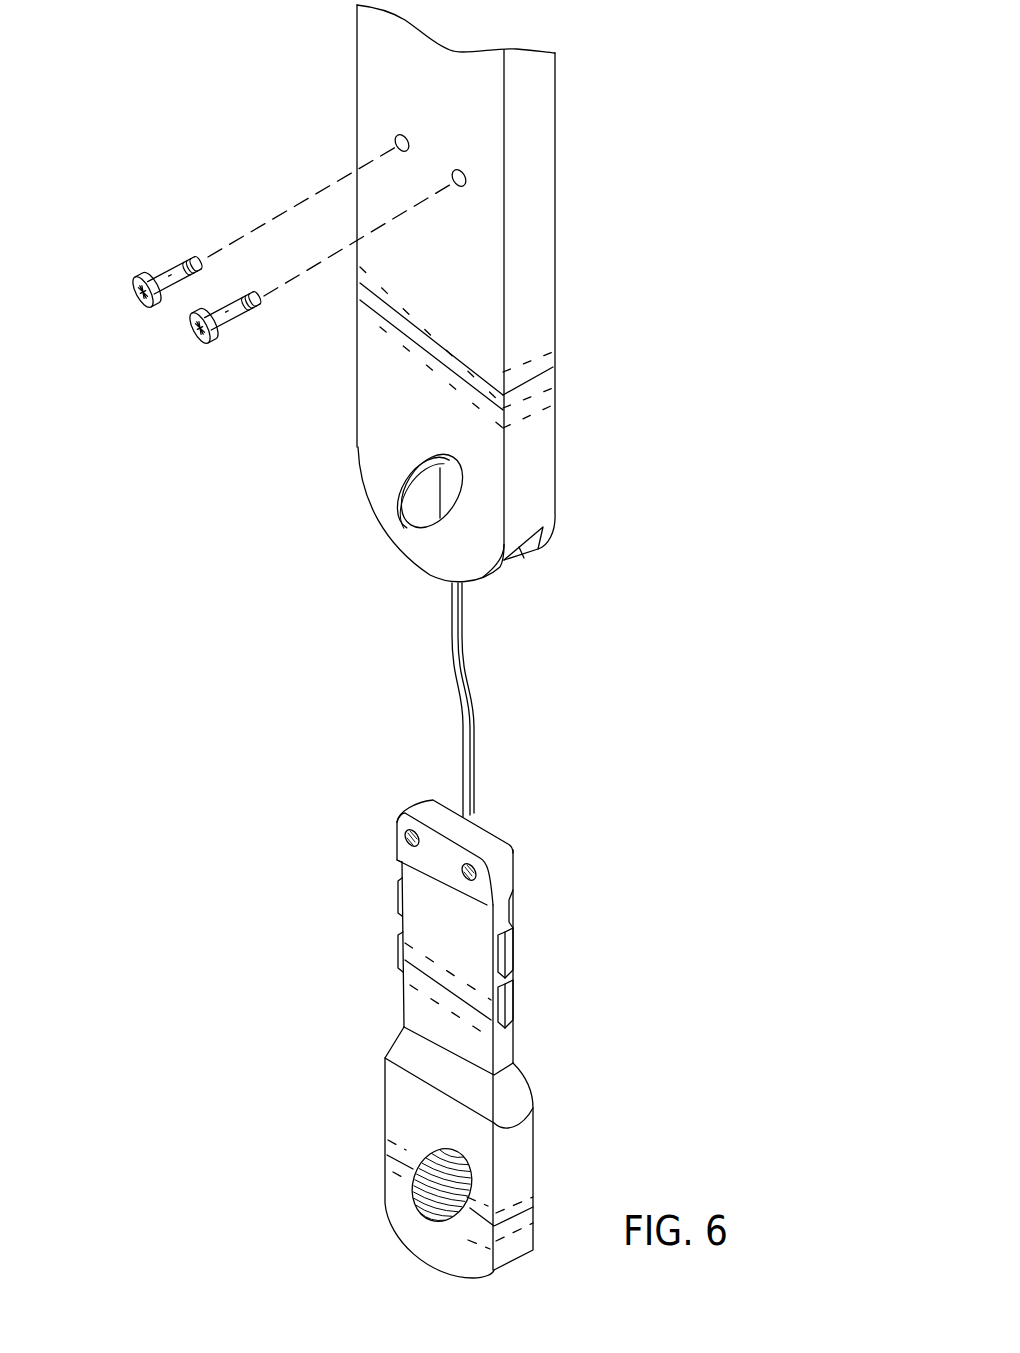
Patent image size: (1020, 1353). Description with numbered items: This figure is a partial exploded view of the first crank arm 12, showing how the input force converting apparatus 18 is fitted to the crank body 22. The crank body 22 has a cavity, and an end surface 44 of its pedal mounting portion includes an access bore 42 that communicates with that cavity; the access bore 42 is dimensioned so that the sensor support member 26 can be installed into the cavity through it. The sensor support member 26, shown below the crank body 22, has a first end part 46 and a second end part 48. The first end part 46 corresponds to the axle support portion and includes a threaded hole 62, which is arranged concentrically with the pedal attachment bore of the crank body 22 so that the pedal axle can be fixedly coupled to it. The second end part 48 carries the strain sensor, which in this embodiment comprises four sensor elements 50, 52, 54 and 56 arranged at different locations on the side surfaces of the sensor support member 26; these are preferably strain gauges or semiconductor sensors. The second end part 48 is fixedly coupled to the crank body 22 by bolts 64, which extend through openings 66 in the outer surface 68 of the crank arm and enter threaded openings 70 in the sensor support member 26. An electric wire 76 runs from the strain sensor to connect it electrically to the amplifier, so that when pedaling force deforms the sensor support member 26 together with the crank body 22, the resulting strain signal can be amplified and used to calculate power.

The first crank arm 12 is at (557, 147).
The crank body 22 is at (557, 228).
The openings 66 is at (455, 172).
The bolt 64 is at (181, 276).
The outer surface 68 is at (457, 283).
The end surface 44 is at (543, 542).
The access bore 42 is at (522, 556).
The electric wire 76 is at (471, 703).
The input force converting apparatus 18 is at (516, 1047).
The second end part 48 is at (397, 845).
The threaded openings 70 is at (418, 846).
The sensor element 56 is at (399, 893).
The sensor element 54 is at (399, 951).
The sensor element 52 is at (515, 953).
The sensor element 50 is at (515, 1005).
The sensor support member 26 is at (420, 1002).
The first end part 46 is at (534, 1178).
The threaded hole 62 is at (430, 1197).